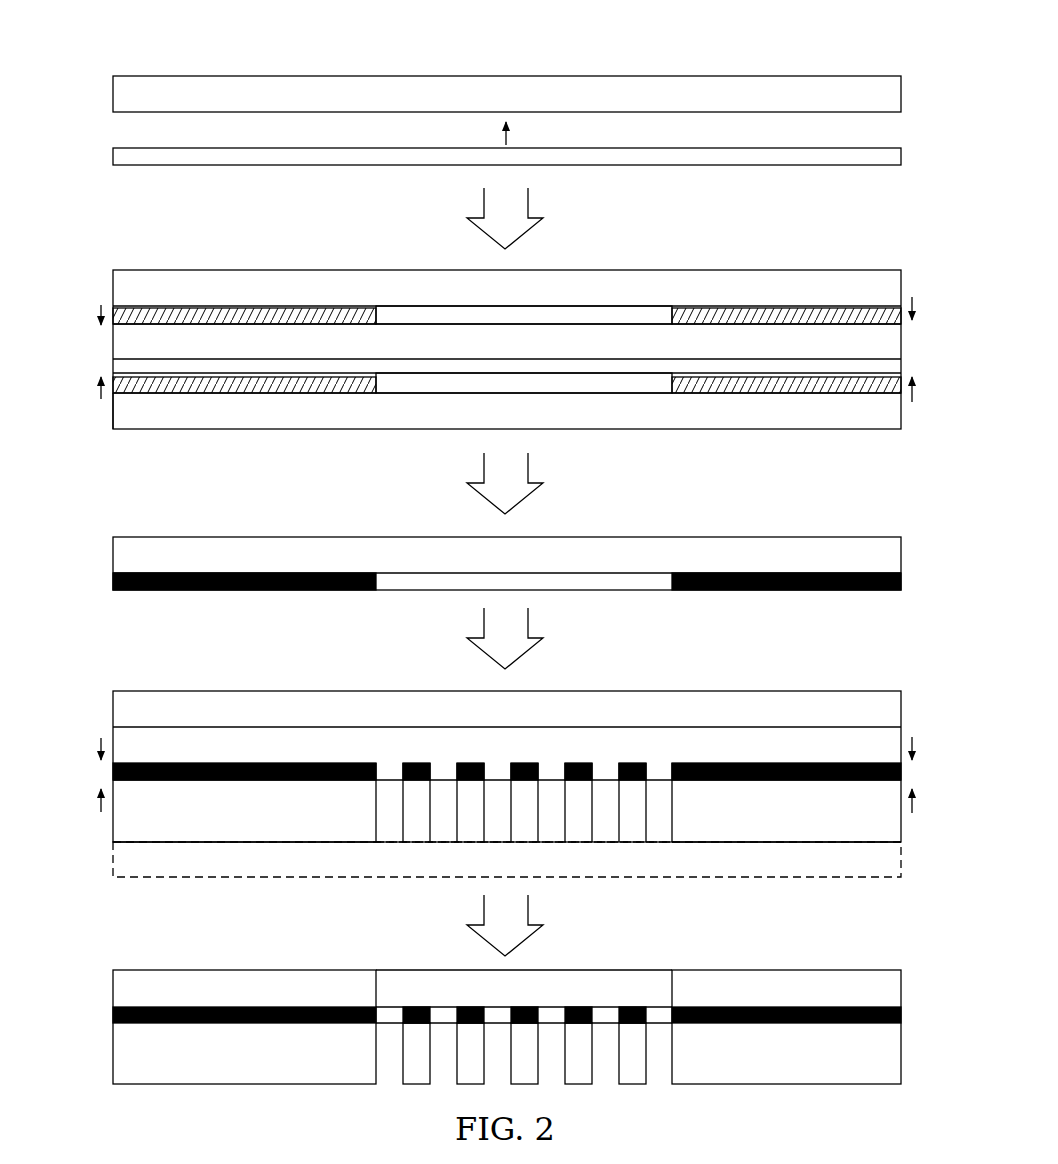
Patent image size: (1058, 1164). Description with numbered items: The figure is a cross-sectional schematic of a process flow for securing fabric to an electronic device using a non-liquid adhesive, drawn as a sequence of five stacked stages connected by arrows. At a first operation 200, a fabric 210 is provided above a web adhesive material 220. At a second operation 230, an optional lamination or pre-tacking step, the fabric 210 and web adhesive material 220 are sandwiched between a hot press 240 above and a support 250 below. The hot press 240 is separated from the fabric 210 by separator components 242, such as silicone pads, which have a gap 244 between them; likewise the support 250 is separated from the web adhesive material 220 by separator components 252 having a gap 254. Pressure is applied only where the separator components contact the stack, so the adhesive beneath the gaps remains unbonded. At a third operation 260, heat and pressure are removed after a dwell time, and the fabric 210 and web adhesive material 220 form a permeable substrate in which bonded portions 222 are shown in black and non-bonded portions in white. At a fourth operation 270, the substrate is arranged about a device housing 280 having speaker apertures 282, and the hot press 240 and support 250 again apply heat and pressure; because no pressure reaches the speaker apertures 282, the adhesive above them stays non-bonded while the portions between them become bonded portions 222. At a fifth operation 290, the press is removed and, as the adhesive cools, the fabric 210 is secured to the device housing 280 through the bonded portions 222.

The first operation 200 is at (866, 46).
The fabric 210 is at (113, 93).
The web adhesive material 220 is at (113, 163).
The second operation 230 is at (866, 252).
The hot press 240 is at (113, 280).
The separator components 242 is at (113, 314).
The gap 244 is at (447, 314).
The support 250 is at (113, 410).
The separator components 252 is at (113, 383).
The gap 254 is at (450, 383).
The third operation 260 is at (867, 519).
The bonded portions 222 is at (113, 582).
The fourth operation 270 is at (873, 678).
The device housing 280 is at (113, 812).
The speaker apertures 282 is at (388, 822).
The fifth operation 290 is at (879, 955).